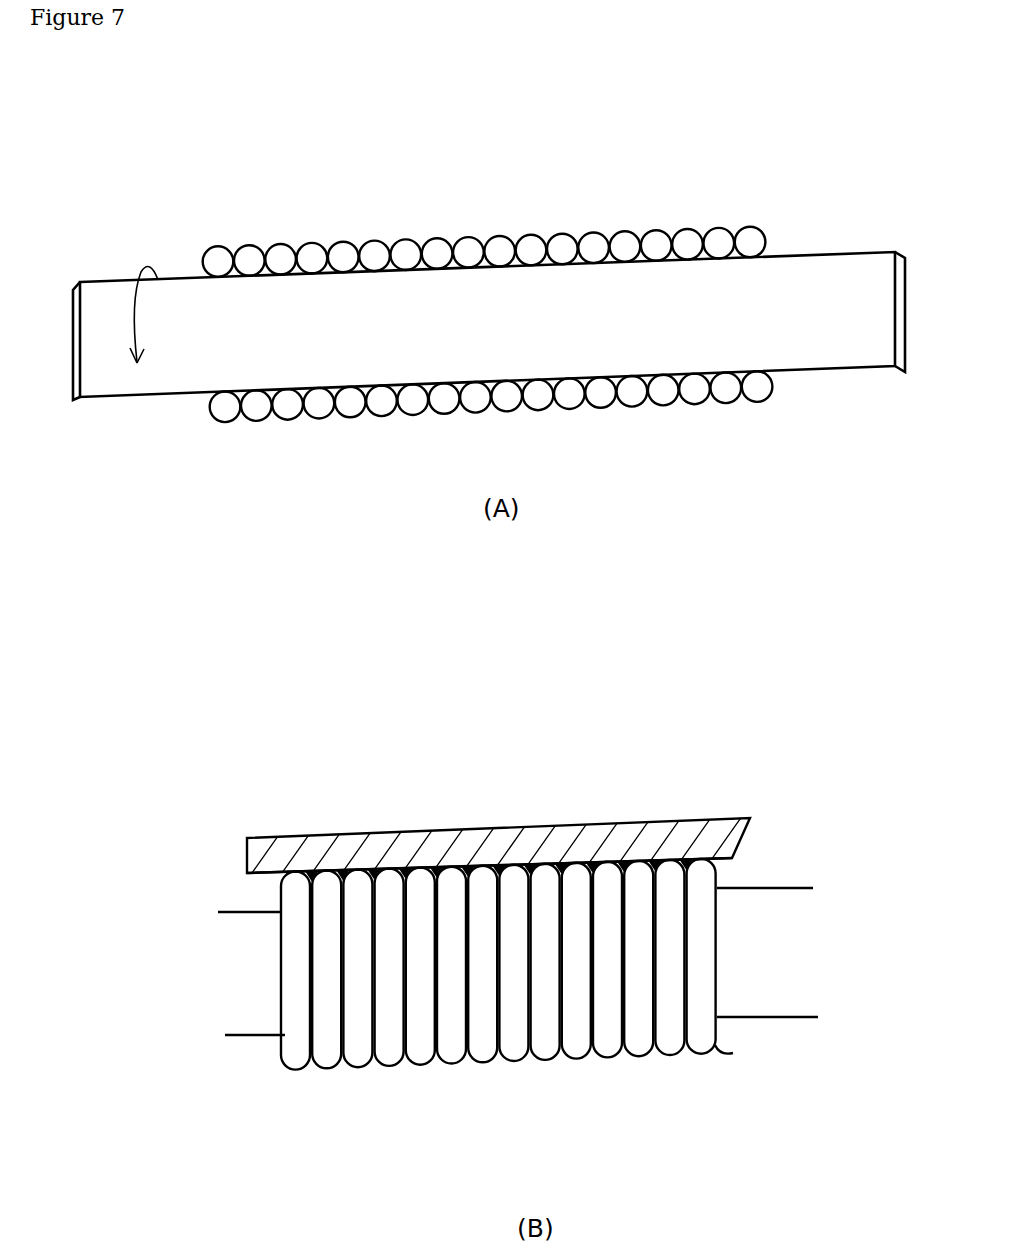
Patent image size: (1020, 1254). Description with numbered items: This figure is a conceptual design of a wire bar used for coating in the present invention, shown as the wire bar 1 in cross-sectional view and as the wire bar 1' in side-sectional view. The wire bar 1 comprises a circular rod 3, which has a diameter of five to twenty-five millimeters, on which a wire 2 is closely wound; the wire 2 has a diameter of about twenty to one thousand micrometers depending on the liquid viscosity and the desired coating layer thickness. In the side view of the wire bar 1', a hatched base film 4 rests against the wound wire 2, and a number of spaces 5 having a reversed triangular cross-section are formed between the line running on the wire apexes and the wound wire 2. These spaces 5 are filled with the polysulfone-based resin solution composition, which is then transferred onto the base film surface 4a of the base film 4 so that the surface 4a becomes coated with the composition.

The wire bar 1 is at (139, 240).
The wire bar 1' is at (160, 755).
The wire 2 is at (248, 262).
The rod 3 is at (178, 373).
The base film 4 is at (250, 864).
The base film surface 4a is at (258, 878).
The spaces 5 is at (297, 876).